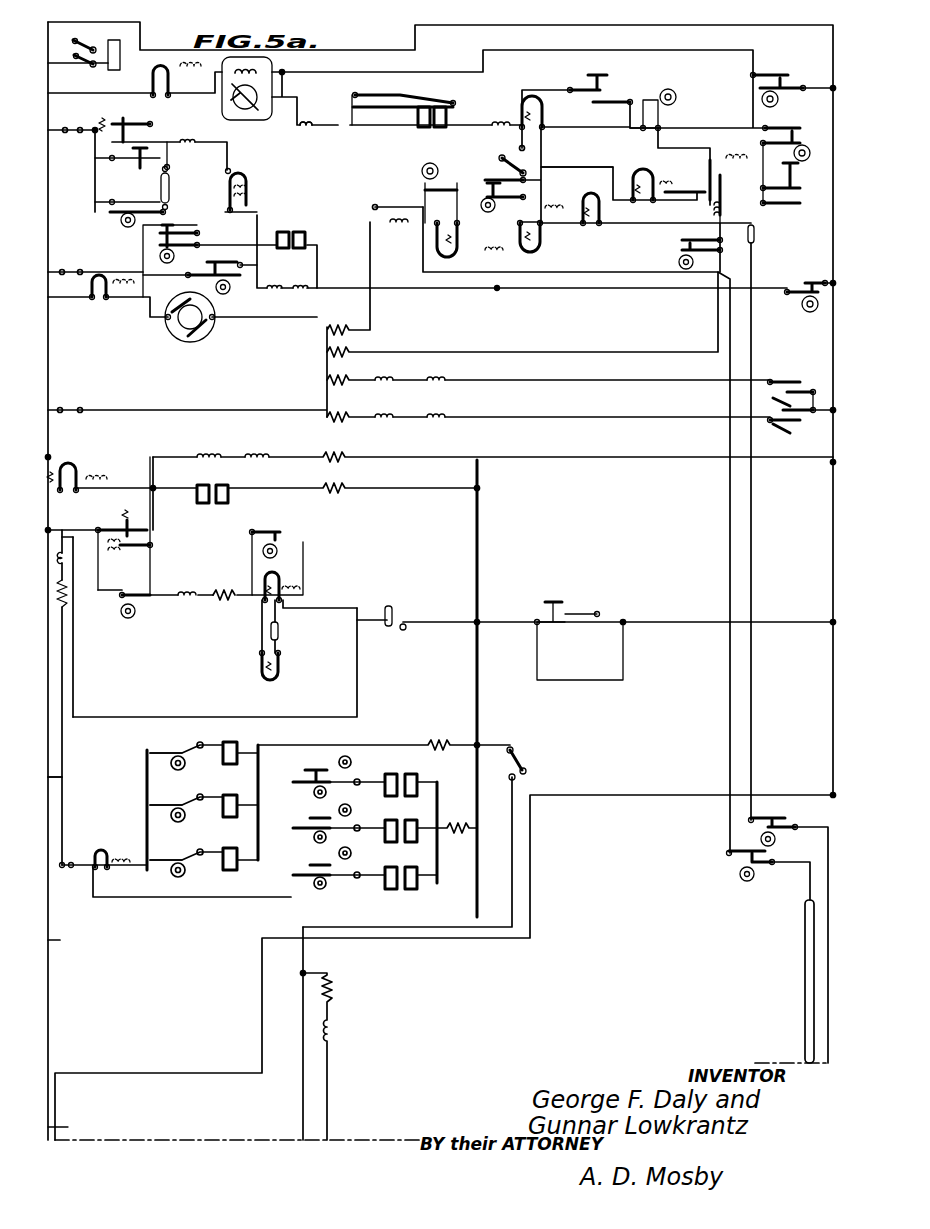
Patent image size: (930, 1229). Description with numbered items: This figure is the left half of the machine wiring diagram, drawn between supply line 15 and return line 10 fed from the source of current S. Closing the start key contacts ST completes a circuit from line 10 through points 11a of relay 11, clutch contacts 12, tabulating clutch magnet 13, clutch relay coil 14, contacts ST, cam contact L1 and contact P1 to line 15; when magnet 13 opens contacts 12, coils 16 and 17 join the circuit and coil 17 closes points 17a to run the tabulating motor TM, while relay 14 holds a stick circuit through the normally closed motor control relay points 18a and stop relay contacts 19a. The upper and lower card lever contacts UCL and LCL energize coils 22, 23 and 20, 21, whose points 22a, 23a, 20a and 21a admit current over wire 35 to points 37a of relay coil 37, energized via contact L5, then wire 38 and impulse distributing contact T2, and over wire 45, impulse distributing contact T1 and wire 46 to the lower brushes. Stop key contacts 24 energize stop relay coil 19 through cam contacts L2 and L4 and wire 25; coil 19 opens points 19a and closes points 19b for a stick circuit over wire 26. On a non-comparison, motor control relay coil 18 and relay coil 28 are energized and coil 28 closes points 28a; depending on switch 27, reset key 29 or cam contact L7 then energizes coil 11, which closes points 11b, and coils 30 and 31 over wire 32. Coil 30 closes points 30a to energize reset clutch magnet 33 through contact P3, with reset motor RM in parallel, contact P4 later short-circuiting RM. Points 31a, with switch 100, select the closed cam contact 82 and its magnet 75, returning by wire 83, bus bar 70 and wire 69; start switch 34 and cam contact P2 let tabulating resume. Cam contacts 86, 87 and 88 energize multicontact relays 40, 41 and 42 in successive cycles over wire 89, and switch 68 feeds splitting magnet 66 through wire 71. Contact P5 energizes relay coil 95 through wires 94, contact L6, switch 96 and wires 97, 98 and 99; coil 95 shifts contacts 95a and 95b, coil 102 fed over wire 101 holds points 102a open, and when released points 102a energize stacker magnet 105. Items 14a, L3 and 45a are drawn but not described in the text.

The line 15 is at (652, 25).
The line 10 is at (67, 581).
The source of current S is at (98, 44).
The coil 17 is at (178, 64).
The points 17a is at (172, 80).
The tabulating motor TM is at (232, 100).
The points 11a is at (102, 118).
The points 11b is at (139, 119).
The relay coil 11 is at (186, 146).
The reset key 29 is at (110, 160).
The switch 27 is at (160, 185).
The cam contact L7 is at (116, 214).
The points 28a is at (248, 196).
The relay coil 28 is at (230, 200).
The contact P3 is at (160, 240).
The reset clutch magnet 33 is at (307, 241).
The coil 30 is at (274, 284).
The coil 31 is at (310, 284).
The contact P4 is at (228, 280).
The points 30a is at (98, 301).
The reset motor RM is at (204, 324).
The coil 16 is at (305, 129).
The clutch contacts 12 is at (392, 102).
The tabulating clutch magnet 13 is at (447, 116).
The relay coil 14 is at (495, 129).
The relay armature 14a is at (543, 108).
The start key contacts ST is at (604, 93).
The contacts L1 is at (664, 91).
The contacts P1 is at (788, 78).
The wire 26 is at (682, 129).
The lamp L3 is at (804, 135).
The stop key contacts 24 is at (802, 192).
The wire 35 is at (548, 170).
The points 18a is at (630, 178).
The contacts 19a is at (702, 190).
The points 19b is at (748, 168).
The stop relay coil 19 is at (712, 214).
The motor control relay 18 is at (657, 196).
The contacts L5 is at (447, 184).
The start switch 34 is at (505, 166).
The cam contacts P2 is at (503, 201).
The points 21a is at (578, 206).
The coil 21 is at (554, 216).
The relay coil 37 is at (396, 227).
The points 37a is at (447, 256).
The points 23a is at (518, 244).
The coil 23 is at (505, 254).
The wire 38 is at (588, 276).
The contact L4 is at (680, 241).
The fuse 45a is at (760, 239).
The wire 45 is at (755, 271).
The cam contact L2 is at (795, 289).
The wire 32 is at (497, 291).
The wire 25 is at (564, 357).
The coil 20 is at (306, 650).
The coil 22 is at (300, 592).
The lower card lever contacts LCL is at (806, 375).
The upper card lever contacts UCL is at (803, 424).
The wire 69 is at (580, 460).
The points 102a is at (78, 478).
The coil 102 is at (110, 476).
The magnet 105 is at (230, 499).
The wires 94 is at (99, 527).
The contact 95b is at (126, 522).
The contacts 95a is at (150, 546).
The relay coil 95 is at (118, 572).
The contact P5 is at (135, 612).
The contact L6 is at (286, 540).
The points 22a is at (292, 590).
The points 20a is at (281, 667).
The switch 96 is at (405, 614).
The wire 97 is at (224, 723).
The wire 101 is at (75, 672).
The wire 98 is at (75, 952).
The switch 100 is at (66, 870).
The points 31a is at (104, 848).
The wire 89 is at (135, 898).
The cam contact 82 is at (147, 845).
The magnets 75 is at (226, 852).
The wire 83 is at (380, 752).
The switch 68 is at (528, 763).
The bus bar 70 is at (480, 712).
The contact cam 86 is at (318, 768).
The contact cam 87 is at (312, 798).
The contact cam 88 is at (305, 857).
The multicontact relay 40 is at (393, 790).
The multicontact relay 41 is at (413, 838).
The multicontact relay 42 is at (415, 888).
The wire 99 is at (530, 871).
The wire 71 is at (303, 1093).
The magnet 66 is at (335, 1044).
The impulse distributing contact T1 is at (777, 818).
The impulse distributing contact T2 is at (755, 854).
The wire 46 is at (828, 889).